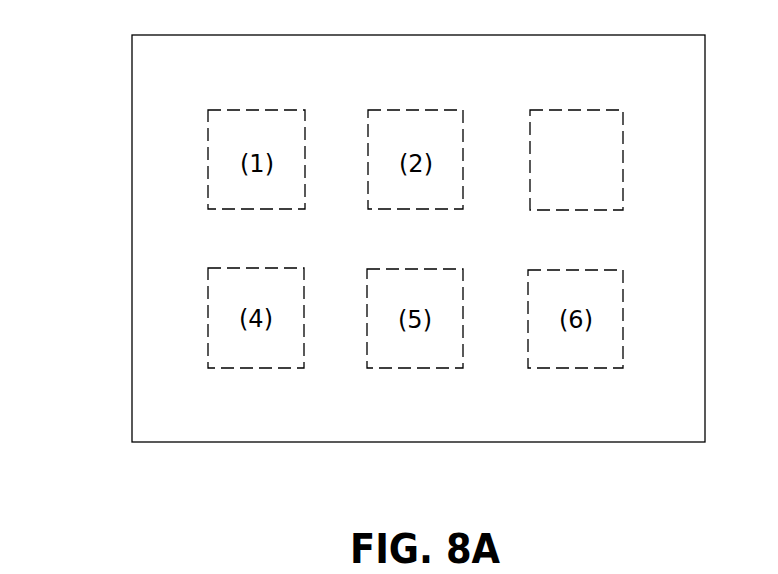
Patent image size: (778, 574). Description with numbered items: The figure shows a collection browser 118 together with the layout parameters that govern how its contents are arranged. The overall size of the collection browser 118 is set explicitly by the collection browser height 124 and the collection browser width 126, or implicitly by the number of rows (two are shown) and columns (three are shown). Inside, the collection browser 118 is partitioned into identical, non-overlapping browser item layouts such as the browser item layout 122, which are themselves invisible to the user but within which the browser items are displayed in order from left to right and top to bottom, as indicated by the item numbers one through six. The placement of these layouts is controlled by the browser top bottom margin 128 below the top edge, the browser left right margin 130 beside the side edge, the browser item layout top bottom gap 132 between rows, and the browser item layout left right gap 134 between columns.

The collection browser 118 is at (548, 35).
The browser item layout 122 is at (624, 184).
The collection browser height 124 is at (105, 440).
The collection browser width 126 is at (703, 455).
The browser top bottom margin 128 is at (257, 36).
The browser left right margin 130 is at (208, 318).
The browser item layout top bottom gap 132 is at (576, 210).
The browser item layout left right gap 134 is at (528, 319).